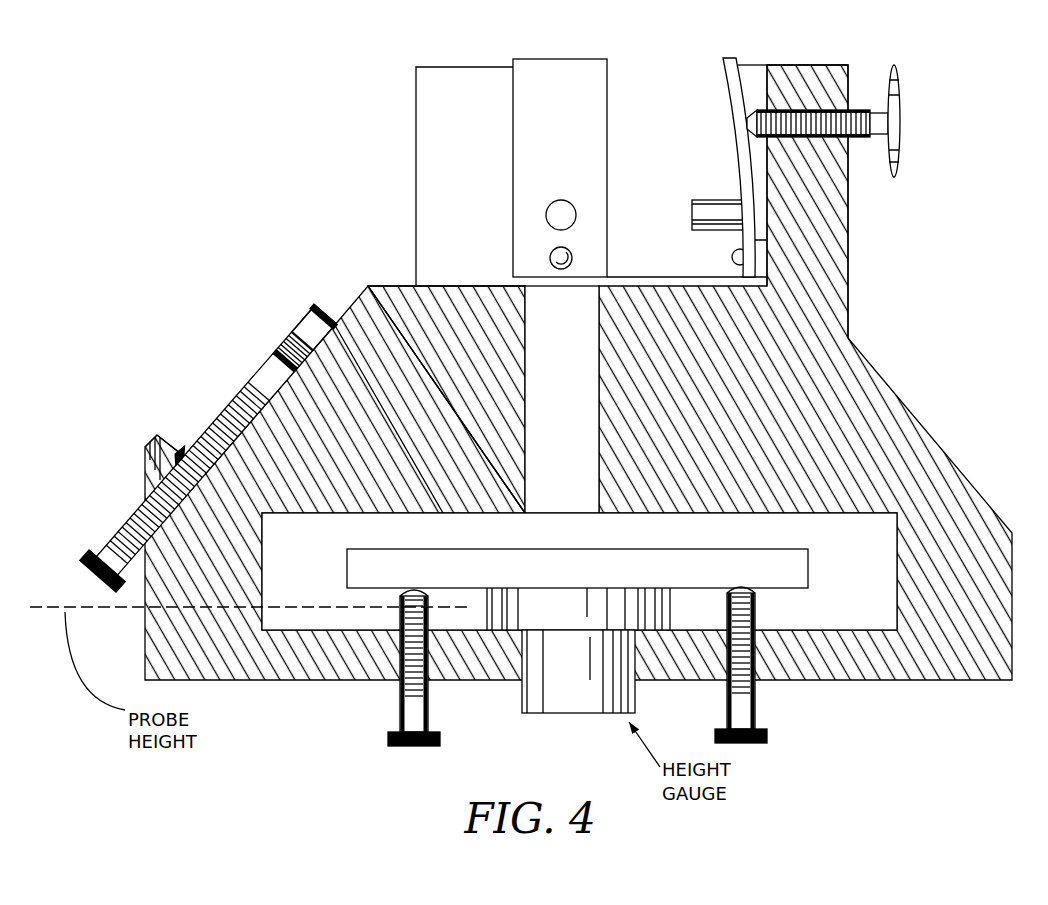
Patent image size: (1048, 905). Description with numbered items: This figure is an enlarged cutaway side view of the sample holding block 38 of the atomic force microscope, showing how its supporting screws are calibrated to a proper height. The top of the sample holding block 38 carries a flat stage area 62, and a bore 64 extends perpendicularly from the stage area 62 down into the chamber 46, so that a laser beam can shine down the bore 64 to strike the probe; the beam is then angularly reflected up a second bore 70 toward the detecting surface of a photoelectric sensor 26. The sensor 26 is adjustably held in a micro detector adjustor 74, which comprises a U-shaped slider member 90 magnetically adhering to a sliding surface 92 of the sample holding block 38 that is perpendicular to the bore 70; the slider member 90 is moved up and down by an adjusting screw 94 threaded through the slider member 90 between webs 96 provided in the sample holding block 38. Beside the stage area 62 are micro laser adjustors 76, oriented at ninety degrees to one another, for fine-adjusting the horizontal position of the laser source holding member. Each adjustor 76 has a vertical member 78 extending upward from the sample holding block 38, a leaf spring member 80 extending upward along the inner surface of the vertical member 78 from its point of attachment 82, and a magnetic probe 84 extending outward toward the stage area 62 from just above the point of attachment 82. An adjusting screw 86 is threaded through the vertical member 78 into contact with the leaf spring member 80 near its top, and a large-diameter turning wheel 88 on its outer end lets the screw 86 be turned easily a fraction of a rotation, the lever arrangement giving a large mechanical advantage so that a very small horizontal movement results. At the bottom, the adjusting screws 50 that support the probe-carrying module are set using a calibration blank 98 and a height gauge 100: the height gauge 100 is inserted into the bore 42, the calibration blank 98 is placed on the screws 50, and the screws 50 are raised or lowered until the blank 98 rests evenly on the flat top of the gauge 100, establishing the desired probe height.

The photoelectric sensor 26 is at (292, 308).
The sample holding block 38 is at (906, 350).
The bore 42 is at (520, 665).
The chamber 46 is at (834, 611).
The adjusting screws 50 is at (428, 708).
The stage area 62 is at (392, 288).
The bore 64 is at (551, 413).
The bore 70 is at (388, 443).
The micro detector adjustor 74 is at (195, 400).
The micro laser adjustors 76 is at (478, 138).
The vertical member 78 is at (827, 287).
The leaf spring member 80 is at (731, 147).
The point of attachment 82 is at (737, 258).
The magnetic probe 84 is at (692, 222).
The adjusting screw 86 is at (848, 172).
The turning wheel 88 is at (897, 137).
The slider member 90 is at (220, 407).
The sliding surface 92 is at (252, 418).
The adjusting screw 94 is at (108, 538).
The webs 96 is at (155, 447).
The calibration blank 98 is at (787, 570).
The height gauge 100 is at (578, 693).